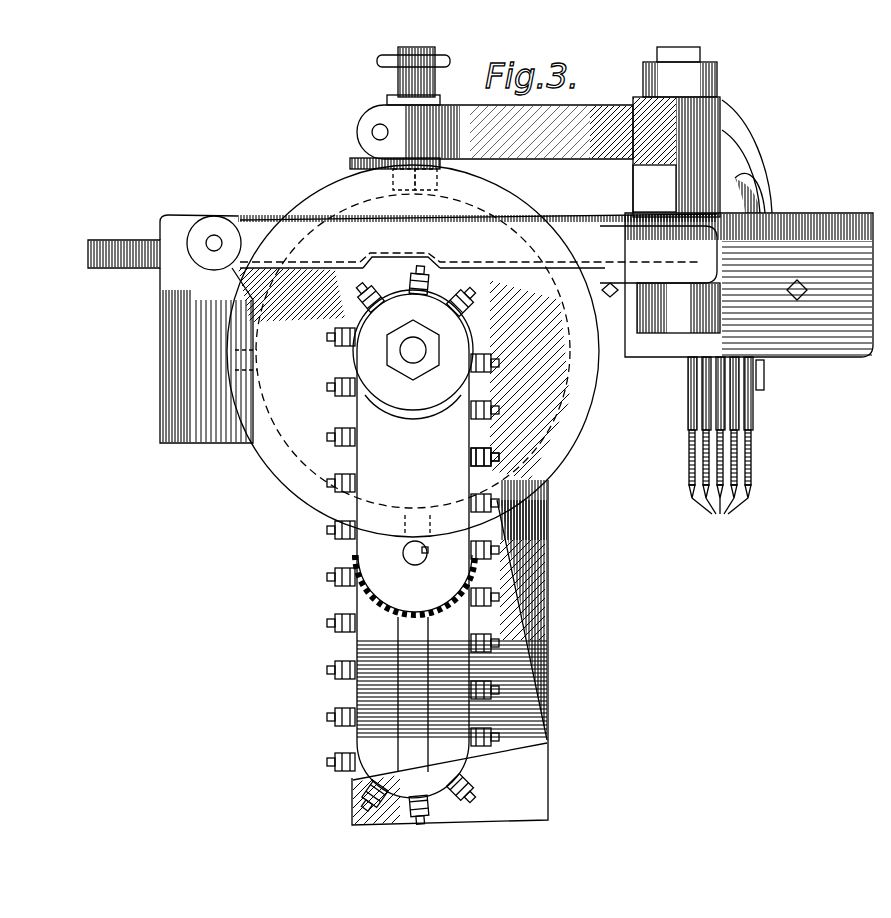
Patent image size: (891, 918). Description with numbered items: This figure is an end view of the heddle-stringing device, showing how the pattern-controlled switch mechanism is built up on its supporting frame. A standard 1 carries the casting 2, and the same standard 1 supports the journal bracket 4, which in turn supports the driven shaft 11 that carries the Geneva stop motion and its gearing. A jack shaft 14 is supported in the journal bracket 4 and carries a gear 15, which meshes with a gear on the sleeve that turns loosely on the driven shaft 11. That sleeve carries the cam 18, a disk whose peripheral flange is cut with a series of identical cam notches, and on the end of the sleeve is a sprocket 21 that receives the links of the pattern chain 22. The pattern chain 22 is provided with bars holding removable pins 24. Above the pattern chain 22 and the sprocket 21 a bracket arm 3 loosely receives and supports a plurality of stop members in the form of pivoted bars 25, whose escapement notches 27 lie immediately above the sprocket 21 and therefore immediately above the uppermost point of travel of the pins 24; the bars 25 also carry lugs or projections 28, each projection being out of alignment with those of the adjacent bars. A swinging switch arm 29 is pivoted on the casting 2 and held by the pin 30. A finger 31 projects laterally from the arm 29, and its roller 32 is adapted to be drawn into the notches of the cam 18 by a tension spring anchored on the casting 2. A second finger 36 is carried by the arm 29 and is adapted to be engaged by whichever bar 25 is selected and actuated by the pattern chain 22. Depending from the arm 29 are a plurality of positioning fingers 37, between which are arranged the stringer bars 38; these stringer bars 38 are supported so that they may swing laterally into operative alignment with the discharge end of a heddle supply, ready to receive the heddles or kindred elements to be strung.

The standard 1 is at (550, 588).
The casting 2 is at (836, 340).
The bracket arm 3 is at (162, 288).
The journal bracket 4 is at (520, 625).
The driven shaft 11 is at (405, 352).
The jack shaft 14 is at (410, 553).
The gear 15 is at (385, 582).
The cam 18 is at (585, 428).
The sprocket 21 is at (405, 420).
The pattern chain 22 is at (333, 718).
The removable pins 24 is at (497, 458).
The pivoted bars 25 is at (590, 245).
The escapement notches 27 is at (432, 272).
The lugs or projections 28 is at (697, 242).
The swinging switch arm 29 is at (757, 200).
The pin 30 is at (703, 55).
The finger 31 is at (586, 105).
The roller 32 is at (372, 163).
The finger 36 is at (676, 215).
The positioning fingers 37 is at (690, 390).
The stringer bars 38 is at (720, 520).